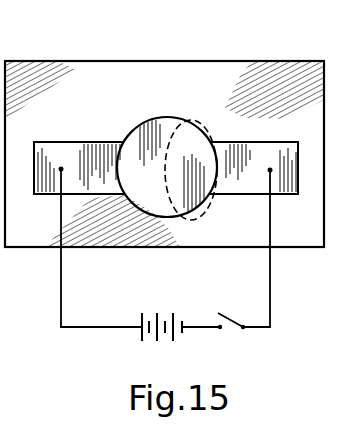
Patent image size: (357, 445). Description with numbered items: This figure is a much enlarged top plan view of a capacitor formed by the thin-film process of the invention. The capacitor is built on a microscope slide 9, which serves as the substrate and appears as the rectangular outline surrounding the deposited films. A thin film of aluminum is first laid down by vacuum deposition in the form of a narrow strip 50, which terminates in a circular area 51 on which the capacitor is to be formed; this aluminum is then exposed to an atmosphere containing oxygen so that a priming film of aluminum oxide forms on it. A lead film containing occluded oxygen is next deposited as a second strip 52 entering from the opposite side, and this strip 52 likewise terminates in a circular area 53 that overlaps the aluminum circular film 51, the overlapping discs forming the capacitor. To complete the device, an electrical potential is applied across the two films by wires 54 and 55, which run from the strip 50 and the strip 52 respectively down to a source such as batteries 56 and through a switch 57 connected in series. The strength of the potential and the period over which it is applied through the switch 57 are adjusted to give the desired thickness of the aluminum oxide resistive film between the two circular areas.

The microscope slide 9 is at (200, 61).
The aluminum film strip 50 is at (57, 150).
The aluminum circular area 51 is at (186, 222).
The lead film strip 52 is at (285, 148).
The lead circular area 53 is at (192, 117).
The wire 54 is at (61, 289).
The wire 55 is at (271, 289).
The batteries 56 is at (142, 332).
The switch 57 is at (222, 329).